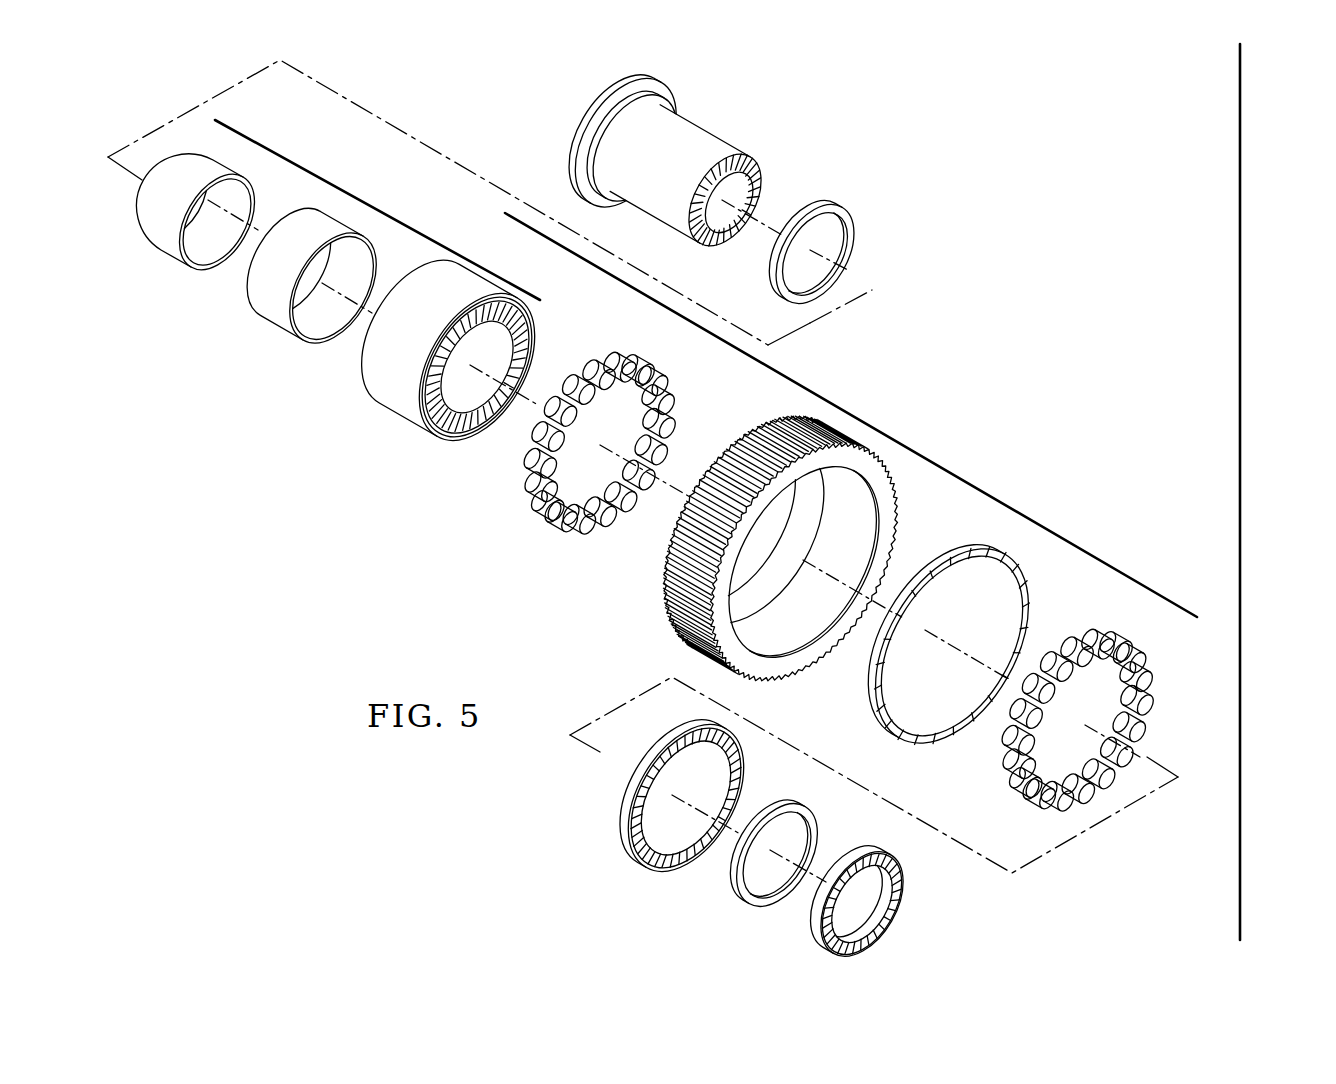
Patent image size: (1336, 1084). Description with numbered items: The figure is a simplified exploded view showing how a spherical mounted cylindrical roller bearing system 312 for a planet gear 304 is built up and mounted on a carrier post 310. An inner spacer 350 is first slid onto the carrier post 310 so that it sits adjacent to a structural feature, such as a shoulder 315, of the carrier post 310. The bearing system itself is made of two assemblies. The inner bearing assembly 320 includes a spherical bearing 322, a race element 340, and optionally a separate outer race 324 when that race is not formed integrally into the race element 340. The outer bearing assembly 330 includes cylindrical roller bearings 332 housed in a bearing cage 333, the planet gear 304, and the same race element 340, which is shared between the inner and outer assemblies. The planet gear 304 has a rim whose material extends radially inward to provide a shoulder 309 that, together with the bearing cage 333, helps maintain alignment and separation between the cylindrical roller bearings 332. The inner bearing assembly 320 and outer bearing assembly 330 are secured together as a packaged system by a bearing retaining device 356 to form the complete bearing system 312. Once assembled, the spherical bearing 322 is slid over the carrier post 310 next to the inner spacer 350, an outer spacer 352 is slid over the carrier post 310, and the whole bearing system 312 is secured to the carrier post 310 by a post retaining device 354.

The planet gear 304 is at (660, 595).
The shoulder 309 is at (836, 632).
The carrier post 310 is at (727, 152).
The spherical mounted cylindrical roller bearing system 312 is at (1241, 492).
The structural feature (shoulder) of the carrier post 315 is at (690, 113).
The inner bearing assembly 320 is at (377, 210).
The spherical bearing 322 is at (165, 264).
The outer race 324 is at (292, 334).
The outer bearing assembly 330 is at (851, 415).
The cylindrical roller bearings 332 is at (550, 532).
The bearing cage 333 is at (955, 553).
The race element 340 is at (413, 422).
The inner spacer 350 is at (862, 238).
The outer spacer 352 is at (753, 905).
The post retaining device 354 is at (912, 913).
The bearing retaining device 356 is at (617, 845).